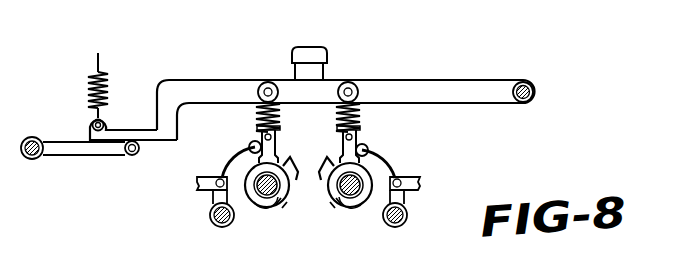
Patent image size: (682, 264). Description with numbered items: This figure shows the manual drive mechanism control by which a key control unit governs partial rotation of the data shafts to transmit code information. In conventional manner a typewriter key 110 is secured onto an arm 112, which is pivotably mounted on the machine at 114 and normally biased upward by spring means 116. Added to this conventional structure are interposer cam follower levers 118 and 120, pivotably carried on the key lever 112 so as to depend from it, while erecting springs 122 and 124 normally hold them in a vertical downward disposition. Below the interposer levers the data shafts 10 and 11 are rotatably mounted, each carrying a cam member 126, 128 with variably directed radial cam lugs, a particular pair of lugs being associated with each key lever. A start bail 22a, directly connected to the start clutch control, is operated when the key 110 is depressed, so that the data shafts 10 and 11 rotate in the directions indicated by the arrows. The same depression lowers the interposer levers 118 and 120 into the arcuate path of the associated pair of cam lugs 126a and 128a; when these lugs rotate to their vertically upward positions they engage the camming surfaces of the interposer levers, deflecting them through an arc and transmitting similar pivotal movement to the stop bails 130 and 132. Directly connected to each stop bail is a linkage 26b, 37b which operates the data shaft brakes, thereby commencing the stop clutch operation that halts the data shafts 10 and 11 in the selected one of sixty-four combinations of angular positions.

The data shaft 10 is at (262, 195).
The data shaft 11 is at (355, 201).
The start bail 22a is at (76, 150).
The linkage 26b is at (213, 191).
The linkage 37b is at (421, 190).
The typewriter key 110 is at (322, 50).
The arm (key lever) 112 is at (453, 63).
The pivot mounting 114 is at (533, 83).
The spring means 116 is at (103, 84).
The interposer cam follower lever 118 is at (279, 152).
The interposer cam follower lever 120 is at (368, 141).
The erecting spring 122 is at (256, 118).
The erecting spring 124 is at (361, 118).
The cam member 126 is at (271, 206).
The cam lug 126a is at (297, 182).
The cam member 128 is at (346, 207).
The cam lug 128a is at (331, 152).
The stop bail 130 is at (222, 168).
The stop bail 132 is at (400, 167).